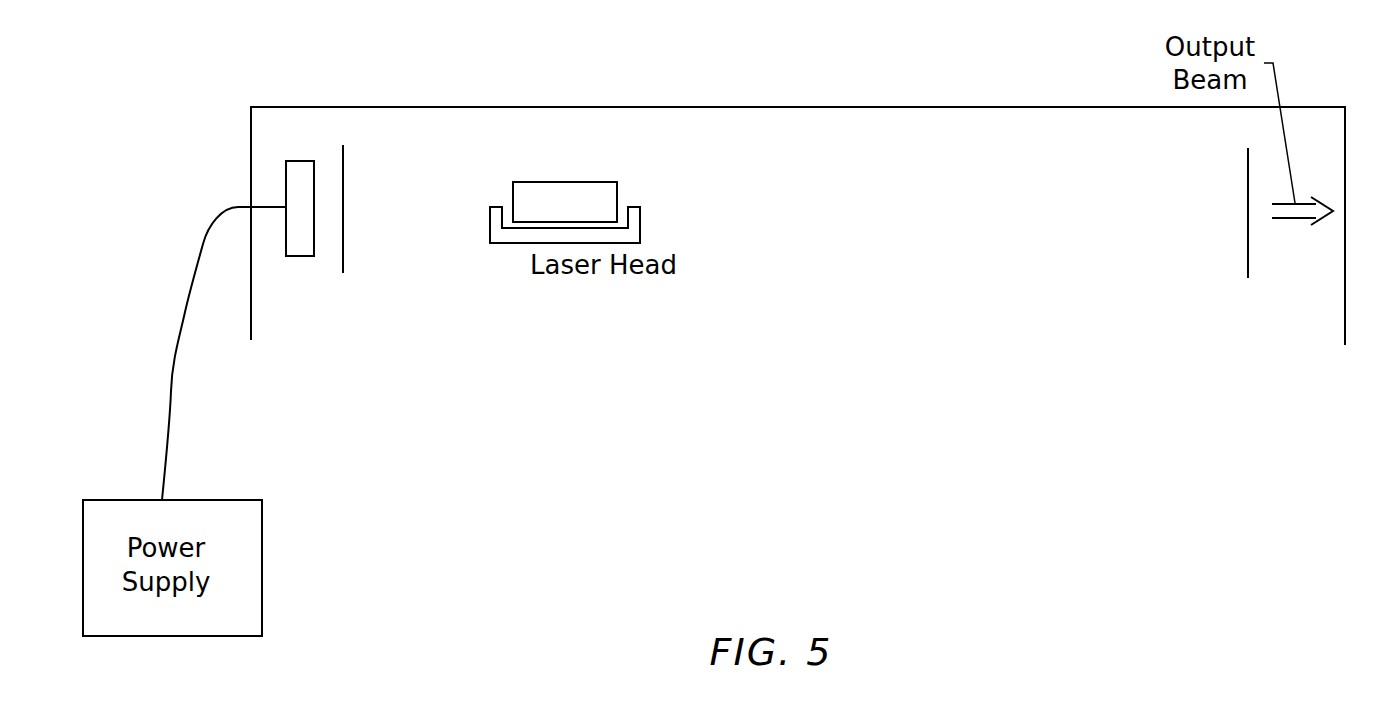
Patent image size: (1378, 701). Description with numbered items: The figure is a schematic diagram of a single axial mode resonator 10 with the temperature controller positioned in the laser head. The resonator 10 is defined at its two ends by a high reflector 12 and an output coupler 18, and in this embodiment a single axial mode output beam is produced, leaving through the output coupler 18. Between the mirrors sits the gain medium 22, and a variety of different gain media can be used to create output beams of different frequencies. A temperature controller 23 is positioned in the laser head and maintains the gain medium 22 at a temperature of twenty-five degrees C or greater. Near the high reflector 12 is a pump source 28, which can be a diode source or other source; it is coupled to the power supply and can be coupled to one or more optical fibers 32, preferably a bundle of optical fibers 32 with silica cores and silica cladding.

The resonator 10 is at (709, 92).
The high reflector 12 is at (343, 257).
The output coupler 18 is at (1250, 262).
The gain medium 22 is at (560, 188).
The temperature controller 23 is at (511, 238).
The pump source 28 is at (300, 170).
The optical fibers 32 is at (265, 203).